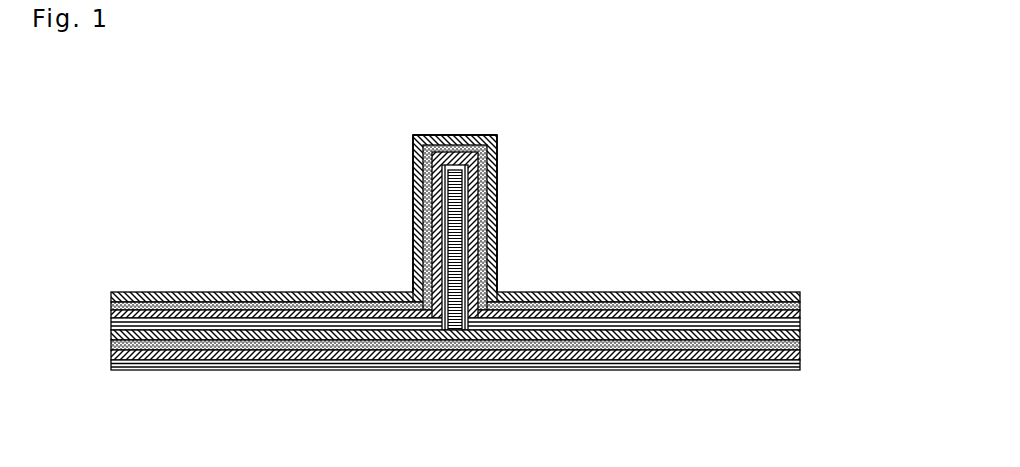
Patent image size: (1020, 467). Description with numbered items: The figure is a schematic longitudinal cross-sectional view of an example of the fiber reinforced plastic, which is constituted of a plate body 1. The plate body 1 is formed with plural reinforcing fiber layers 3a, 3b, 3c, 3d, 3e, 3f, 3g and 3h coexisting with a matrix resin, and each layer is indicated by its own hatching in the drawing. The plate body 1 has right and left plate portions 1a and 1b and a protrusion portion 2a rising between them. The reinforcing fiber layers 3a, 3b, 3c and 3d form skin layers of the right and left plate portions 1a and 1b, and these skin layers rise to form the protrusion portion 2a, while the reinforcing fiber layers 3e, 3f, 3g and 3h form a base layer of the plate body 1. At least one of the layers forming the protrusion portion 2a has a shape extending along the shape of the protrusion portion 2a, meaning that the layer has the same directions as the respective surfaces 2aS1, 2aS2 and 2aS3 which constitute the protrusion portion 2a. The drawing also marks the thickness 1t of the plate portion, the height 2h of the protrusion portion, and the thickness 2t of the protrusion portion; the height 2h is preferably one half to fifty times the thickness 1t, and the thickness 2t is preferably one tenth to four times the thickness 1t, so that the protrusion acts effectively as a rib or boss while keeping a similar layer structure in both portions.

The plate body 1 is at (494, 260).
The right plate portion 1a is at (793, 287).
The left plate portion 1b is at (387, 283).
The thickness of the plate portion 1t is at (112, 370).
The protrusion portion 2a is at (503, 140).
The height of the protrusion portion 2h is at (338, 135).
The thickness of the protrusion portion 2t is at (507, 111).
The surface of the protrusion portion 2aS1 is at (497, 207).
The surface of the protrusion portion 2aS2 is at (452, 135).
The surface of the protrusion portion 2aS3 is at (413, 218).
The reinforcing fiber layer 3a is at (800, 288).
The reinforcing fiber layer 3b is at (800, 305).
The reinforcing fiber layer 3c is at (800, 314).
The reinforcing fiber layer 3d is at (800, 324).
The reinforcing fiber layer 3e is at (800, 335).
The reinforcing fiber layer 3f is at (800, 345).
The reinforcing fiber layer 3g is at (800, 355).
The reinforcing fiber layer 3h is at (800, 365).